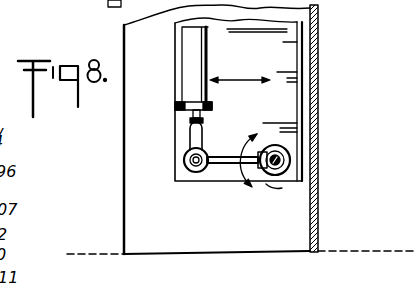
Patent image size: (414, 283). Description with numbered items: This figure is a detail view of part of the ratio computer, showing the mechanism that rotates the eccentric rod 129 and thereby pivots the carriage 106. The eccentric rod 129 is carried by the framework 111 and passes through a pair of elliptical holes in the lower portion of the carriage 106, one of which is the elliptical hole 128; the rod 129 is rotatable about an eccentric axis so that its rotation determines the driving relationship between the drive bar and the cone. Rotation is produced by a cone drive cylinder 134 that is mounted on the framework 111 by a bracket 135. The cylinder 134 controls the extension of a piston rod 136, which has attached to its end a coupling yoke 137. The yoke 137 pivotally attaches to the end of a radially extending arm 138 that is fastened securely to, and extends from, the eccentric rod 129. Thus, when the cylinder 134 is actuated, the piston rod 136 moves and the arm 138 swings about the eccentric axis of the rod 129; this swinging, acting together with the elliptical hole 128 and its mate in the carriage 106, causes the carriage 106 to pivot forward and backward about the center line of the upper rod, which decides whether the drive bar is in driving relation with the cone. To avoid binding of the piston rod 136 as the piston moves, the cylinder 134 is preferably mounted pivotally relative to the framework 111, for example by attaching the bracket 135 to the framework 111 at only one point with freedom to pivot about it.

The carriage 106 is at (248, 61).
The framework 111 is at (208, 234).
The elliptical hole 128 is at (277, 187).
The eccentric rod 129 is at (288, 157).
The cone drive cylinder 134 is at (190, 58).
The bracket 135 is at (212, 105).
The piston rod 136 is at (190, 115).
The coupling yoke 137 is at (192, 140).
The radially extending arm 138 is at (222, 153).